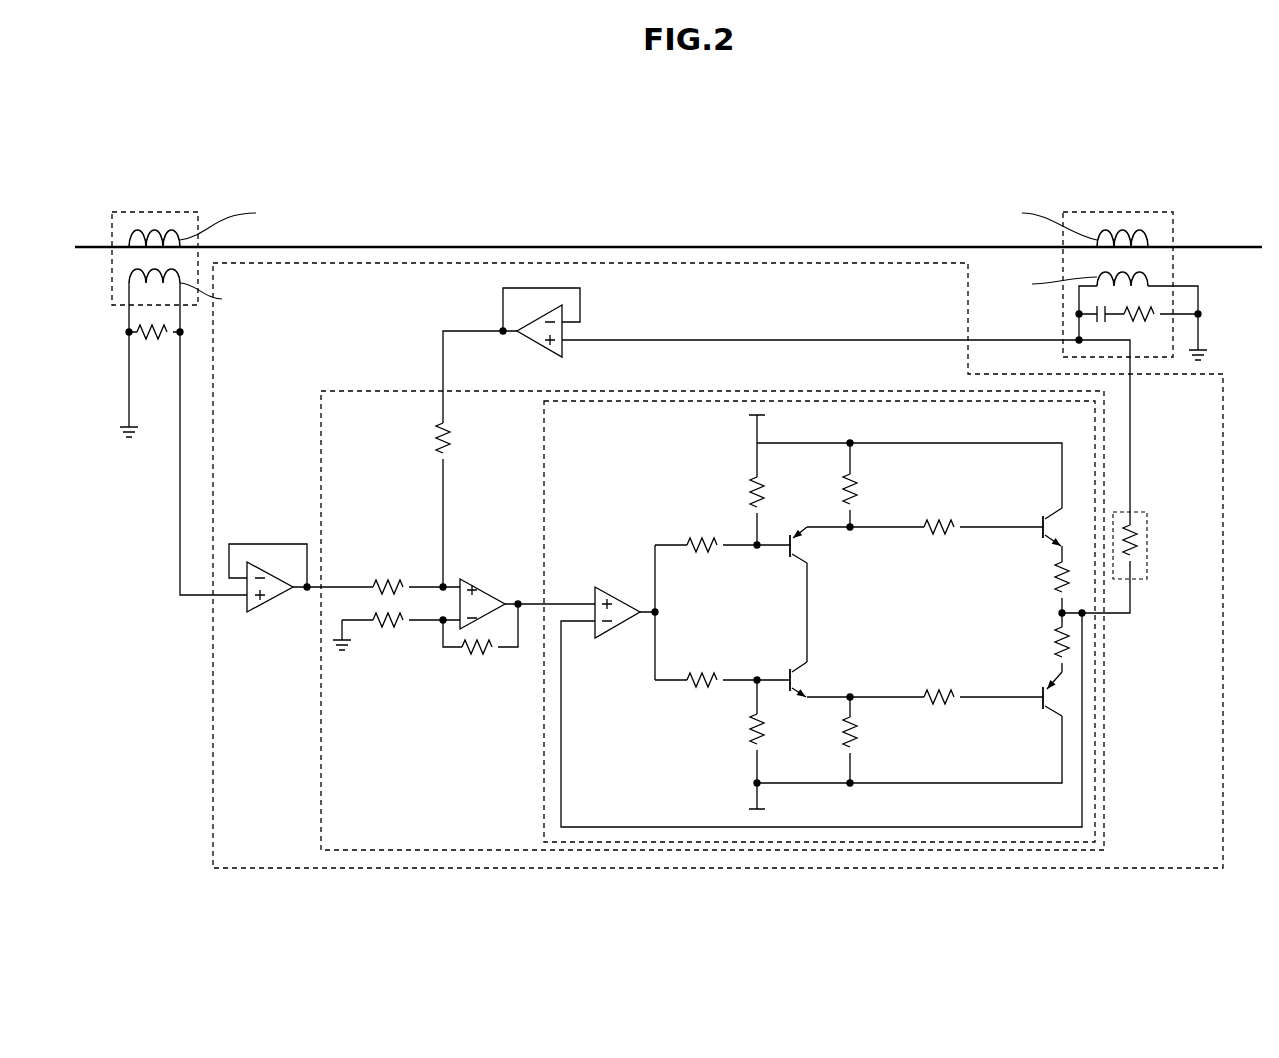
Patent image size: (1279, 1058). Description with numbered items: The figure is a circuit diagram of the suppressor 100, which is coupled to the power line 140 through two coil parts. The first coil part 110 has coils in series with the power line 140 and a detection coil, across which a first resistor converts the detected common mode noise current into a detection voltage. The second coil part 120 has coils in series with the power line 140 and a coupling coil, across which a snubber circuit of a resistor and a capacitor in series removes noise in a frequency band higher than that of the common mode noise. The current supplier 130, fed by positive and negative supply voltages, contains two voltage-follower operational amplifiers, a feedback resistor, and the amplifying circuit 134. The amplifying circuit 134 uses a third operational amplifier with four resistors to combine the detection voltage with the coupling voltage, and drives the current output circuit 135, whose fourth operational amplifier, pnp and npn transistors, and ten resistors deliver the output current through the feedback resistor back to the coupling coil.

The suppressor 100 is at (683, 214).
The first coil part 110 is at (165, 212).
The second coil part 120 is at (1176, 212).
The current supplier 130 is at (212, 783).
The amplifying circuit 134 is at (320, 713).
The current output circuit 135 is at (543, 790).
The power line 140 is at (503, 247).